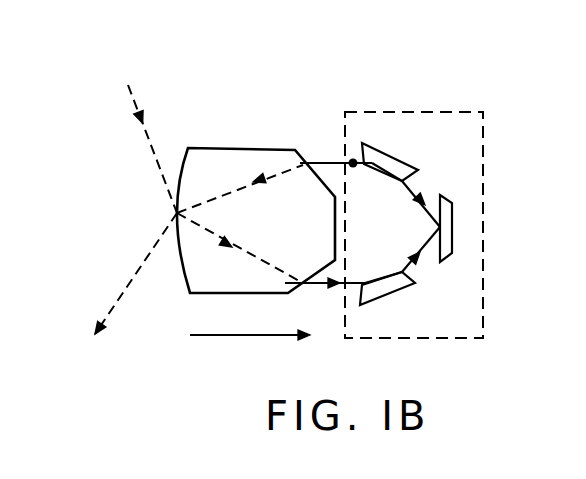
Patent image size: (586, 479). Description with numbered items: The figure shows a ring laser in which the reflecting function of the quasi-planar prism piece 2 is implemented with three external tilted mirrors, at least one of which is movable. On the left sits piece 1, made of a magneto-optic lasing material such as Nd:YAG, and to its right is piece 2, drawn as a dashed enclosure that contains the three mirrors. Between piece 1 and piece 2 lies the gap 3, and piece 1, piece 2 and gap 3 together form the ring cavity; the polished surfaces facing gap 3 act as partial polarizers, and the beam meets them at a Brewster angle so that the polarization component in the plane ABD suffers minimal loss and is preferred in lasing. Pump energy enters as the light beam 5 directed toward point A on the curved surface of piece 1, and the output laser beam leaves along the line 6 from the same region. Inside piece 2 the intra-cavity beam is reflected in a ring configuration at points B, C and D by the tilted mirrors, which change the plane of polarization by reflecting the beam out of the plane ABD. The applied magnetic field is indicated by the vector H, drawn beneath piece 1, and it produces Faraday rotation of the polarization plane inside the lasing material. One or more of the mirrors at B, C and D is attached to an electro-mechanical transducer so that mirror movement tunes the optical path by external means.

The piece of lasing material 1 is at (252, 161).
The quasi-planar reflecting prism 2 is at (344, 170).
The gap 3 is at (345, 138).
The pump light beam 5 is at (146, 133).
The output laser beam line 6 is at (127, 290).
The point A is at (256, 225).
The reflection point B is at (400, 277).
The reflection point C is at (455, 228).
The reflection point D is at (401, 178).
The applied magnetic field vector H is at (250, 349).